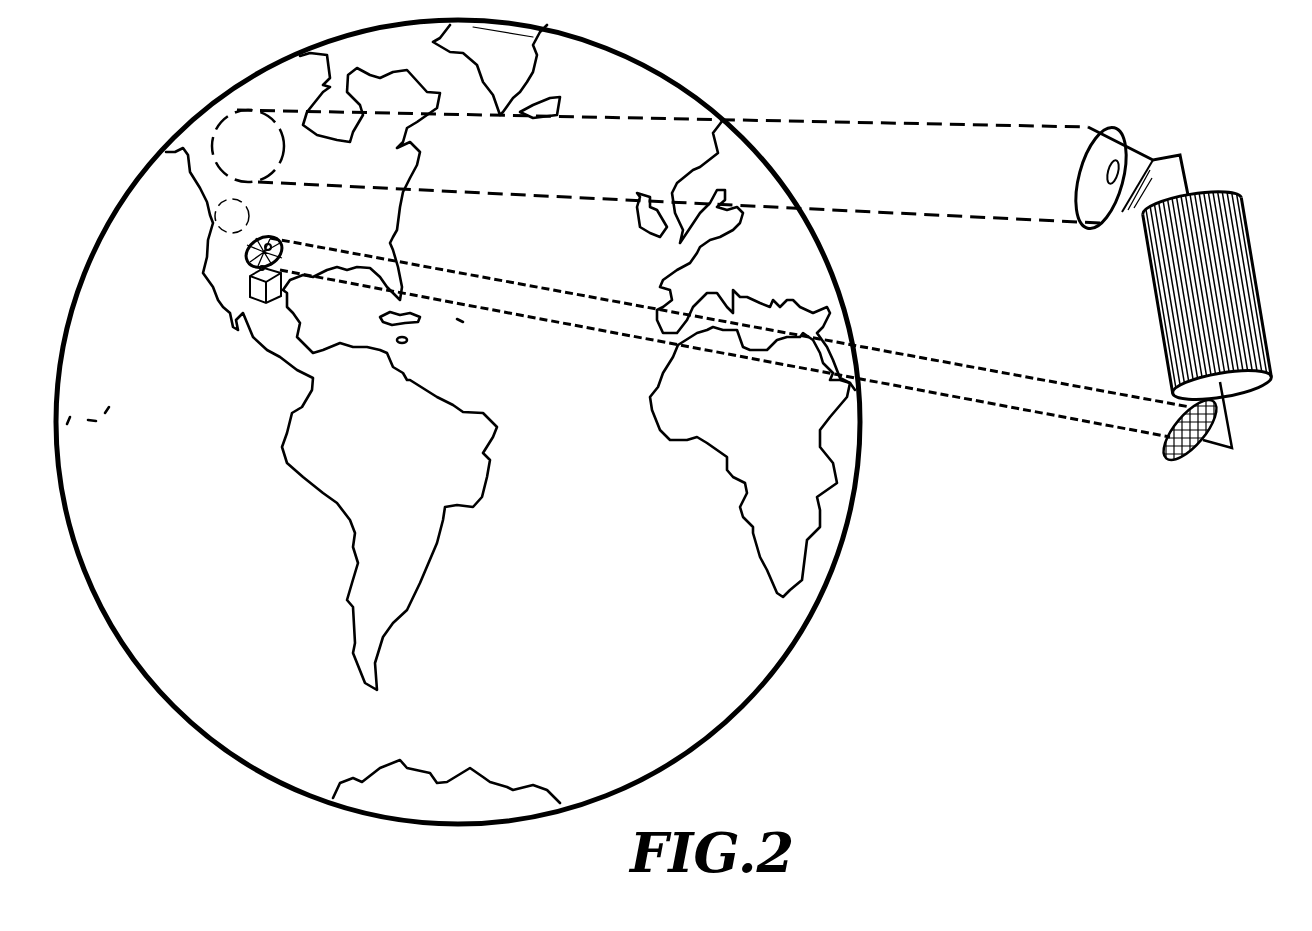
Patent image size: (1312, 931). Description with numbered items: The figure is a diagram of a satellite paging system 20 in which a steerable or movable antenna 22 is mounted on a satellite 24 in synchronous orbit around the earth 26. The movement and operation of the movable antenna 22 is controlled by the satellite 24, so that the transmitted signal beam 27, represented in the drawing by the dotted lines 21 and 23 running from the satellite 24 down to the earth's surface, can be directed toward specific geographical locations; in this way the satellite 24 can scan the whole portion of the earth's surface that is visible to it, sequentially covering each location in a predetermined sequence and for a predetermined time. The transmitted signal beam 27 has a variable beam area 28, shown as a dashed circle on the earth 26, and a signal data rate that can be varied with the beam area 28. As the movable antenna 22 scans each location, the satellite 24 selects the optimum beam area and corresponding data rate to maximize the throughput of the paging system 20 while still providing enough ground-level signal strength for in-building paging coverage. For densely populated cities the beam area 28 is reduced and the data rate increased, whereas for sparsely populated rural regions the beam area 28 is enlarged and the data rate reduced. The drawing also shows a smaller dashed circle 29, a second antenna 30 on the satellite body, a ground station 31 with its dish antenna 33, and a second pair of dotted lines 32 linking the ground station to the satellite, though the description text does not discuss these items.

The satellite paging system 20 is at (111, 106).
The dotted line 21 is at (890, 125).
The movable antenna 22 is at (1095, 128).
The dotted line 23 is at (880, 220).
The satellite 24 is at (1218, 198).
The earth 26 is at (150, 685).
The transmitted signal beam 27 is at (1025, 189).
The beam area 28 is at (225, 115).
The spot beam coverage area 29 is at (225, 205).
The spot beam antenna 30 is at (1190, 455).
The ground station 31 is at (252, 293).
The spot beam signal path 32 is at (955, 358).
The ground station antenna 33 is at (245, 243).